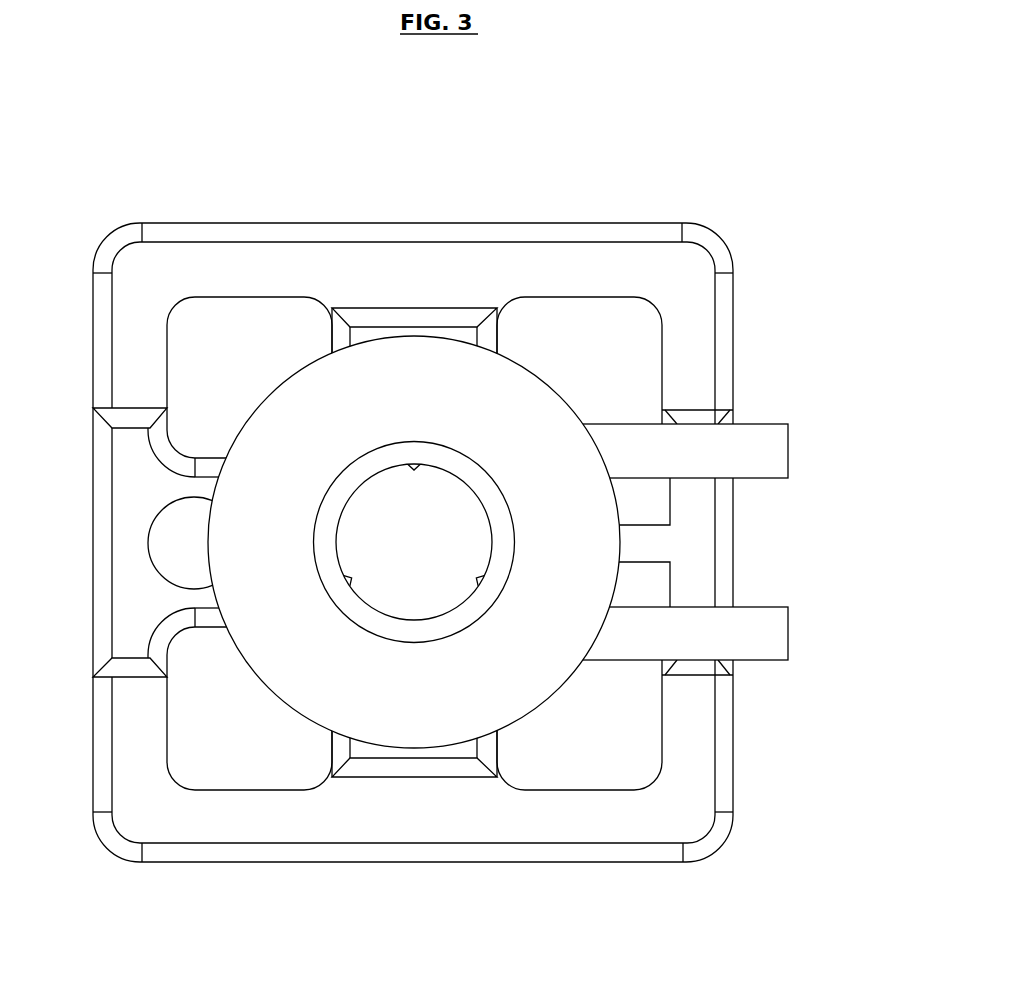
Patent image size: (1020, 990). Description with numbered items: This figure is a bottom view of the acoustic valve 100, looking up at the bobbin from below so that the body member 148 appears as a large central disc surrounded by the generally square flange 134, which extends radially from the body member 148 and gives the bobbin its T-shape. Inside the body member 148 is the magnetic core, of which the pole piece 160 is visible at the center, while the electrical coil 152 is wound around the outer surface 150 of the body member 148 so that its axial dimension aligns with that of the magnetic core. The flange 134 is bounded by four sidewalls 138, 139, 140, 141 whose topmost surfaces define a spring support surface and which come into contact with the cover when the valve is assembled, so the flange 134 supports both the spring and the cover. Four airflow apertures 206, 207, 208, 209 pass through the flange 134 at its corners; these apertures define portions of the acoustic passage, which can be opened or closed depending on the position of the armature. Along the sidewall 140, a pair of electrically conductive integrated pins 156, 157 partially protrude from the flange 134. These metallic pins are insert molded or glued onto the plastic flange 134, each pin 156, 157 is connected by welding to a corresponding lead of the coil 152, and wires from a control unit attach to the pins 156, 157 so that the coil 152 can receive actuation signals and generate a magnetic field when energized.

The acoustic valve 100 is at (457, 125).
The flange 134 is at (275, 192).
The sidewall 138 is at (93, 714).
The sidewall 139 is at (327, 862).
The sidewall 140 is at (735, 752).
The sidewall 141 is at (590, 224).
The body member 148 is at (412, 633).
The outer surface 150 is at (480, 618).
The electrical coil 152 is at (543, 413).
The electrically conductive integrated pin 156 is at (772, 445).
The electrically conductive integrated pin 157 is at (778, 643).
The pole piece 160 is at (352, 540).
The airflow aperture 206 is at (250, 737).
The airflow aperture 207 is at (608, 720).
The airflow aperture 208 is at (577, 322).
The airflow aperture 209 is at (250, 335).